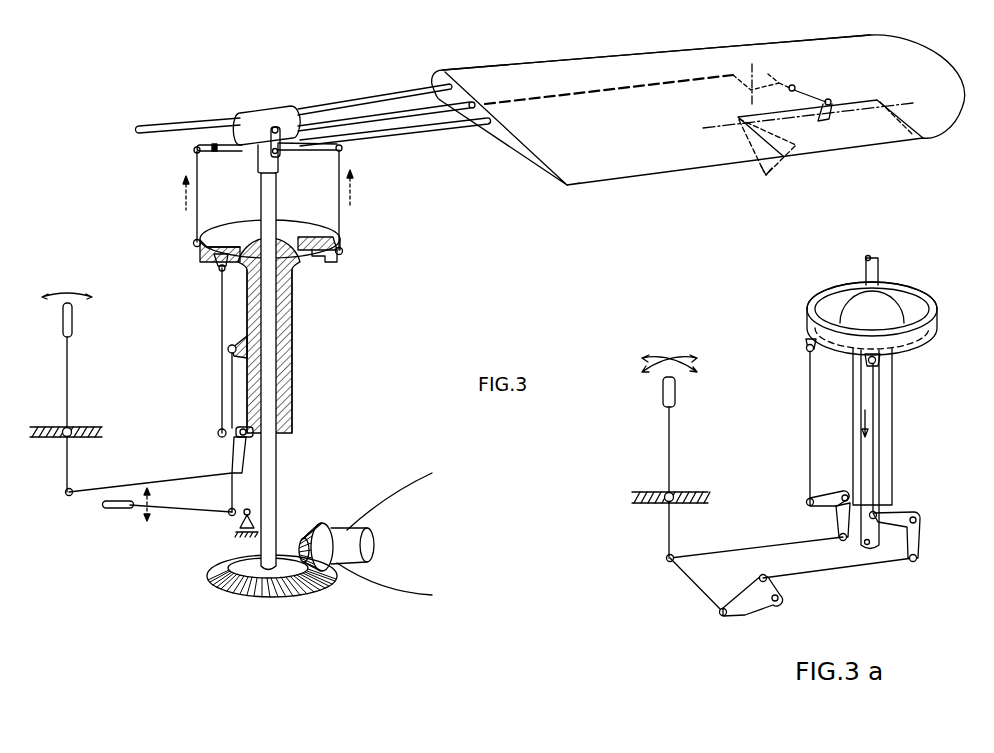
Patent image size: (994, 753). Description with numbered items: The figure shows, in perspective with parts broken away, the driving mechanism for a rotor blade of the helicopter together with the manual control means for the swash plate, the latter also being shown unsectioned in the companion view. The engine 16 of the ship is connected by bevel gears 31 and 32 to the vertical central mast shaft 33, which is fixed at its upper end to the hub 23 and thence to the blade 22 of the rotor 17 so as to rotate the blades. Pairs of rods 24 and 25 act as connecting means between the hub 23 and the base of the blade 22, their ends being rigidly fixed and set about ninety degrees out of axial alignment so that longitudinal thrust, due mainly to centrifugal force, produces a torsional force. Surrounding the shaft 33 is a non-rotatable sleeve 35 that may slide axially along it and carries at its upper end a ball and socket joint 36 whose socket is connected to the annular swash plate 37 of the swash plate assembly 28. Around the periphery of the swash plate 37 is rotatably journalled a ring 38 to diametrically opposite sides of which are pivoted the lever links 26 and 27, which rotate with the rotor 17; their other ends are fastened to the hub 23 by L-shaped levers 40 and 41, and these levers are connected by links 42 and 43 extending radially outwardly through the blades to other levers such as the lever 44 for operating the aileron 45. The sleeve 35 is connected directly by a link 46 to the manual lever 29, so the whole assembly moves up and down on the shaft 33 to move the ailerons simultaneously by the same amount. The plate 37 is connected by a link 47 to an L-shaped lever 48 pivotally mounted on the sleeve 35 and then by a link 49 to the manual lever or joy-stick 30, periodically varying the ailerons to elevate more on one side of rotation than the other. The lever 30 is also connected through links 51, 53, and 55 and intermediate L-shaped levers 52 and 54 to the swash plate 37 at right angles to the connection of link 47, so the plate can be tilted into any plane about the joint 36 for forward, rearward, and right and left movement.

In FIG. 3, the engine 16 is at (415, 548).
In FIG. 3, the rotor 17 is at (541, 61).
In FIG. 3, the blade 22 is at (670, 52).
In FIG. 3, the hub 23 is at (271, 110).
In FIG. 3, the rod 24 is at (216, 146).
In FIG. 3, the rod 25 is at (347, 104).
In FIG. 3, the link lever 26 is at (196, 168).
In FIG. 3, the link lever 27 is at (341, 222).
In FIG. 3, the swash plate assembly 28 is at (335, 265).
In FIG. 3, the manual lever 29 is at (115, 508).
In FIG. 3, the manual lever 30 is at (73, 320).
In FIG. 3A, the manual lever 30 is at (664, 400).
In FIG. 3, the bevel gear 31 is at (310, 527).
In FIG. 3, the bevel gear 32 is at (289, 594).
In FIG. 3, the mast shaft 33 is at (277, 485).
In FIG. 3A, the mast shaft 33 is at (865, 267).
In FIG. 3, the sleeve 35 is at (290, 342).
In FIG. 3A, the sleeve 35 is at (893, 412).
In FIG. 3, the ball and socket joint 36 is at (292, 224).
In FIG. 3A, the ball and socket joint 36 is at (888, 296).
In FIG. 3, the swash plate 37 is at (212, 243).
In FIG. 3A, the swash plate 37 is at (915, 303).
In FIG. 3, the ring 38 is at (222, 222).
In FIG. 3A, the ring 38 is at (828, 289).
In FIG. 3, the L-shaped lever 40 is at (297, 149).
In FIG. 3, the L-shaped lever 41 is at (214, 152).
In FIG. 3, the link 42 is at (133, 130).
In FIG. 3, the link 43 is at (391, 118).
In FIG. 3, the lever 44 is at (768, 83).
In FIG. 3, the aileron 45 is at (838, 148).
In FIG. 3, the link 46 is at (231, 387).
In FIG. 3, the link 47 is at (221, 306).
In FIG. 3A, the link 47 is at (809, 386).
In FIG. 3, the L-shaped lever 48 is at (242, 454).
In FIG. 3A, the L-shaped lever 48 is at (838, 526).
In FIG. 3, the link 49 is at (146, 484).
In FIG. 3A, the link 49 is at (738, 549).
In FIG. 3A, the link 51 is at (700, 596).
In FIG. 3A, the L-shaped lever 52 is at (748, 618).
In FIG. 3A, the link 53 is at (836, 571).
In FIG. 3A, the L-shaped lever 54 is at (920, 541).
In FIG. 3A, the link 55 is at (876, 462).